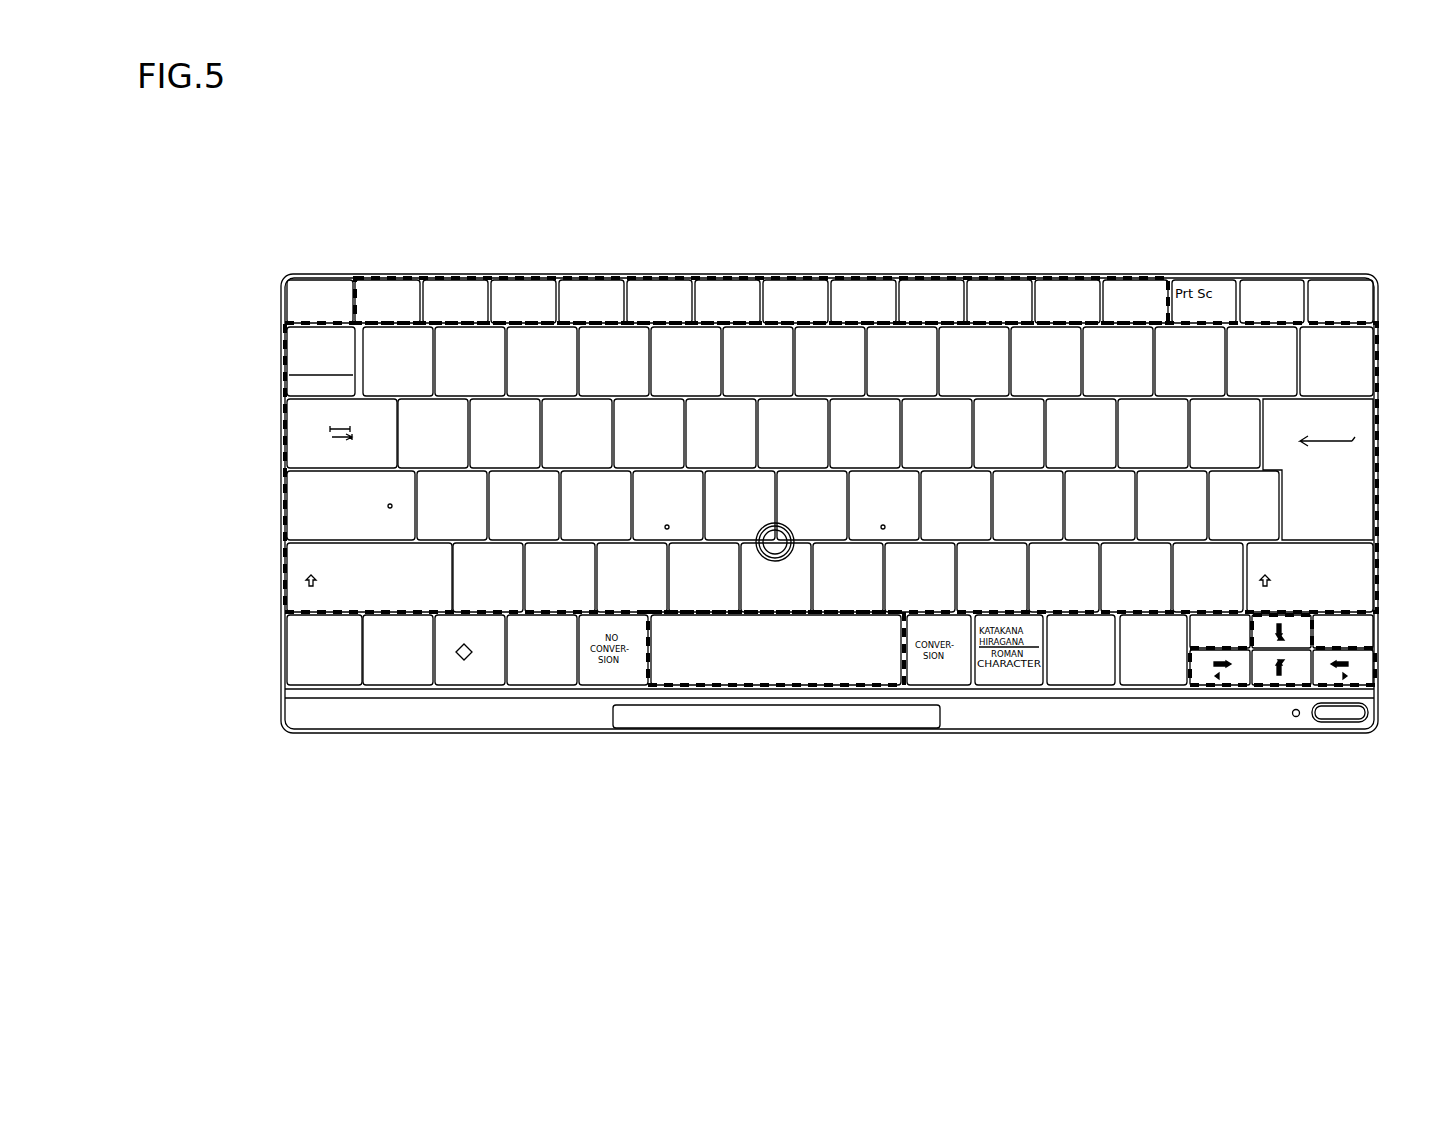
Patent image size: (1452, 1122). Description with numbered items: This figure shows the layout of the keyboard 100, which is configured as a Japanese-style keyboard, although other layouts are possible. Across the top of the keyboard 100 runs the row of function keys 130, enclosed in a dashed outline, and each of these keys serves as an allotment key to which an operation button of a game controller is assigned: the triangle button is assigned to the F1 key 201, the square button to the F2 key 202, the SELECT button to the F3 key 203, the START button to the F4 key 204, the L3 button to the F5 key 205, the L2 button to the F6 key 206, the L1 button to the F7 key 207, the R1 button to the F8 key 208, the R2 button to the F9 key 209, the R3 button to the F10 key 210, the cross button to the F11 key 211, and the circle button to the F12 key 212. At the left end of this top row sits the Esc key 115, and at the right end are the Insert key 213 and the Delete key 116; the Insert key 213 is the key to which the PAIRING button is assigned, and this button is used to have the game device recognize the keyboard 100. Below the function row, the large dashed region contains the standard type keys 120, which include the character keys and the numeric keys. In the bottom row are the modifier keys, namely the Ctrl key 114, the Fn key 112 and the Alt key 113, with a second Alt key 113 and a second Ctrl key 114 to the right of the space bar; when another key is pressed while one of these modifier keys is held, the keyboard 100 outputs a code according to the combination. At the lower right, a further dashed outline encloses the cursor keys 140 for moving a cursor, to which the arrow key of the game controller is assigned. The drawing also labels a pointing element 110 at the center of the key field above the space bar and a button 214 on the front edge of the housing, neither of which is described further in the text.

The keyboard 100 is at (849, 844).
The pointing device / space key area 110 is at (778, 545).
The Fn key 112 is at (405, 660).
The Alt key 113 is at (548, 660).
The Ctrl key 114 is at (303, 667).
The Esc key 115 is at (303, 308).
The Delete key 116 is at (1358, 303).
The standard type keys 120 is at (283, 413).
The function keys 130 is at (355, 277).
The cursor keys 140 is at (1378, 667).
The F1 key 201 is at (400, 290).
The F2 key 202 is at (468, 290).
The F3 key 203 is at (536, 290).
The F4 key 204 is at (604, 290).
The F5 key 205 is at (672, 290).
The F6 key 206 is at (740, 290).
The F7 key 207 is at (808, 290).
The F8 key 208 is at (876, 290).
The F9 key 209 is at (944, 290).
The F10 key 210 is at (1012, 290).
The F11 key 211 is at (1080, 290).
The F12 key 212 is at (1148, 290).
The Insert key 213 is at (1288, 290).
The power button 214 is at (1337, 713).